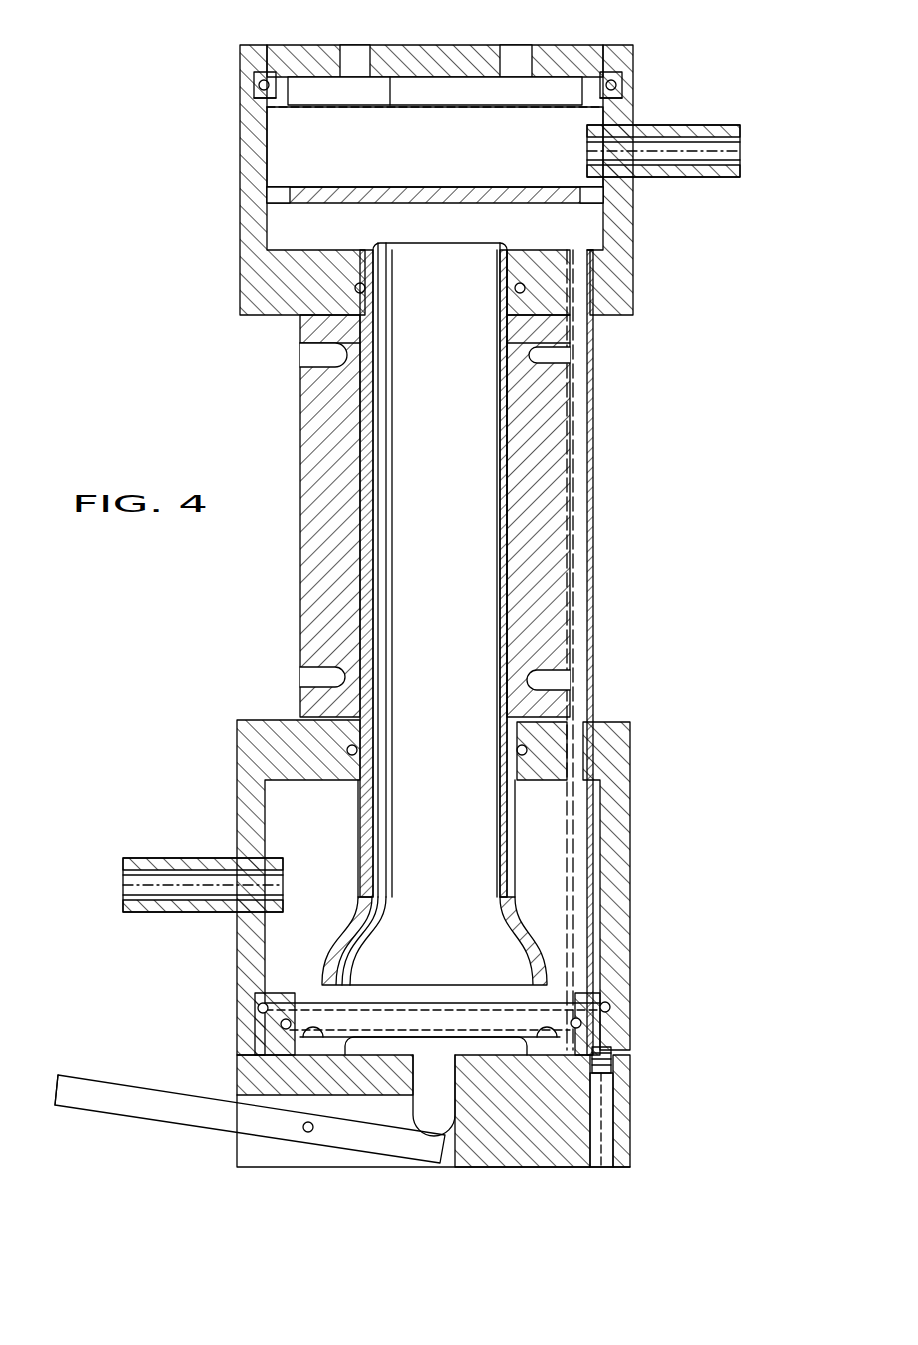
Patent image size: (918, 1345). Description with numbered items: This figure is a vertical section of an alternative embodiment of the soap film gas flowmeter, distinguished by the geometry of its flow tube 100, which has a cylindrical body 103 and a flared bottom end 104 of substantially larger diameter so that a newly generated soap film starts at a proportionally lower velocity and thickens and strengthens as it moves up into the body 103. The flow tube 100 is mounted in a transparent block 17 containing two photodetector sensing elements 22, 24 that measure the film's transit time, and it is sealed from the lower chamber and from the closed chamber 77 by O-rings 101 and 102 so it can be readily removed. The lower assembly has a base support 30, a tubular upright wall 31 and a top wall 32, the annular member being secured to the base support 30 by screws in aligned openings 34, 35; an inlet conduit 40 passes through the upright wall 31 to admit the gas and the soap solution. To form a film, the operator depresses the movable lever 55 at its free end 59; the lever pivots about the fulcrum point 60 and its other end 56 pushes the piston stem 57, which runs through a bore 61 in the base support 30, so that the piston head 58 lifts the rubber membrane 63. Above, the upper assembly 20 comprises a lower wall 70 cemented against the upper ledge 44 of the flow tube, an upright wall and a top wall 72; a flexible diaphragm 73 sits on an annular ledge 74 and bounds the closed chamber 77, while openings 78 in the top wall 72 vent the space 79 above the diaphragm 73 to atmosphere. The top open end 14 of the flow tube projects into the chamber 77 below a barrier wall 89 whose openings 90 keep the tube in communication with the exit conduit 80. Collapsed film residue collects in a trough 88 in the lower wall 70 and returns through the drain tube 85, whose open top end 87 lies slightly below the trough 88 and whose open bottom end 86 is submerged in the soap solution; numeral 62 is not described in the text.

The upper assembly 20 is at (232, 70).
The top open end 14 is at (400, 245).
The block 17 is at (300, 468).
The photodetector sensing element 22 is at (325, 357).
The photodetector sensing element 24 is at (320, 677).
The base support 30 is at (560, 1167).
The upright wall 31 is at (632, 902).
The top wall 32 is at (622, 720).
The opening 34 is at (603, 1143).
The opening 35 is at (610, 1062).
The inlet conduit 40 is at (192, 858).
The upper ledge 44 is at (322, 326).
The movable lever 55 is at (140, 1105).
The lever end 56 is at (430, 1148).
The piston stem 57 is at (455, 1090).
The piston head 58 is at (547, 1040).
The free end 59 is at (56, 1080).
The fulcrum point 60 is at (306, 1133).
The bore 61 is at (500, 1045).
The bolt shank 62 is at (603, 1072).
The membrane 63 is at (252, 1040).
The lower wall 70 is at (633, 305).
The top wall 72 is at (565, 45).
The flexible diaphragm 73 is at (385, 75).
The annular ledge 74 is at (630, 108).
The closed chamber 77 is at (435, 147).
The openings 78 is at (355, 55).
The space 79 is at (437, 85).
The exit conduit 80 is at (698, 177).
The drain tube 85 is at (594, 448).
The open bottom end 86 is at (617, 1035).
The open top end 87 is at (583, 245).
The trough 88 is at (551, 253).
The barrier wall 89 is at (400, 187).
The openings 90 is at (300, 192).
The flow tube 100 is at (348, 852).
The O-ring 101 is at (358, 752).
The O-ring 102 is at (365, 290).
The cylindrical body 103 is at (497, 560).
The flared bottom end 104 is at (338, 958).